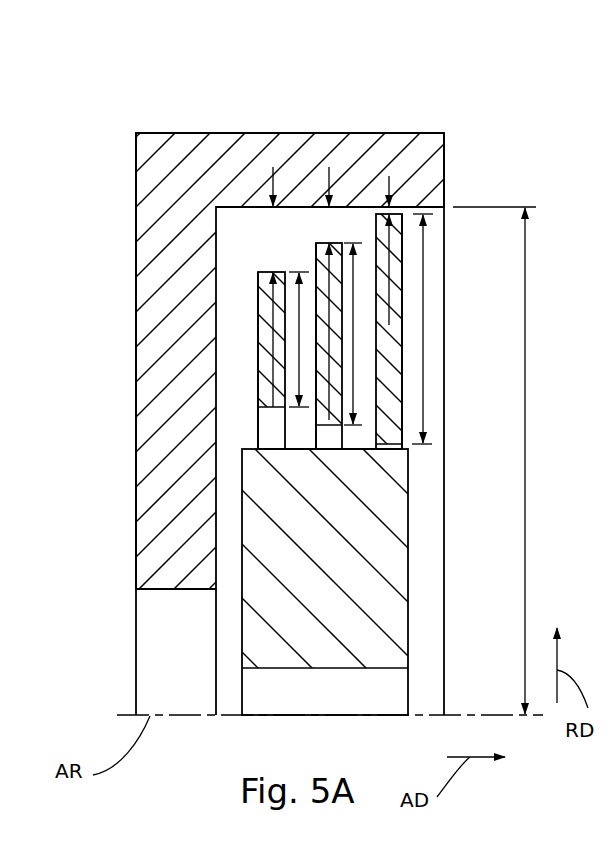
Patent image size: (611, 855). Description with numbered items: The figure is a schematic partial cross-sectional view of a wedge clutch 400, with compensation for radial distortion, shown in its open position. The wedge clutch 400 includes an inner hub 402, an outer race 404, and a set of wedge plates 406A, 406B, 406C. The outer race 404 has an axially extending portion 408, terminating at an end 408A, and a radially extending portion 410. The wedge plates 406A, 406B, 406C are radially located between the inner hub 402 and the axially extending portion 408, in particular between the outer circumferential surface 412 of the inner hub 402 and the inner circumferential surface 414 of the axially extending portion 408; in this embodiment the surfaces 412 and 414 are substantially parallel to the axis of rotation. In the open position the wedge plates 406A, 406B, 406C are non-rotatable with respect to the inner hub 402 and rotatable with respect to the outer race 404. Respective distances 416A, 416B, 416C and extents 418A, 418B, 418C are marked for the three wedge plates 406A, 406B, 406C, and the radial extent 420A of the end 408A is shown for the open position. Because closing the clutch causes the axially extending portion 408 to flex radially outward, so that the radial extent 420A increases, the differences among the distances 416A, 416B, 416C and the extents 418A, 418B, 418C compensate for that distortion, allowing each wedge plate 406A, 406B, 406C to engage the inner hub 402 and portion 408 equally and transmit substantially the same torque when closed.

The wedge clutch 400 is at (113, 184).
The inner hub 402 is at (412, 622).
The outer race 404 is at (188, 131).
The wedge plate 406A is at (258, 295).
The wedge plate 406B is at (315, 262).
The wedge plate 406C is at (416, 212).
The axially extending portion 408 is at (177, 172).
The end 408A is at (390, 176).
The radially extending portion 410 is at (157, 412).
The outer circumferential surface 412 is at (355, 448).
The inner circumferential surface 414 is at (234, 210).
The distance 416A is at (279, 170).
The distance 416B is at (331, 176).
The distance 416C is at (427, 178).
The extent 418A is at (298, 368).
The extent 418B is at (353, 358).
The extent 418C is at (400, 301).
The radial extent 420A is at (527, 518).